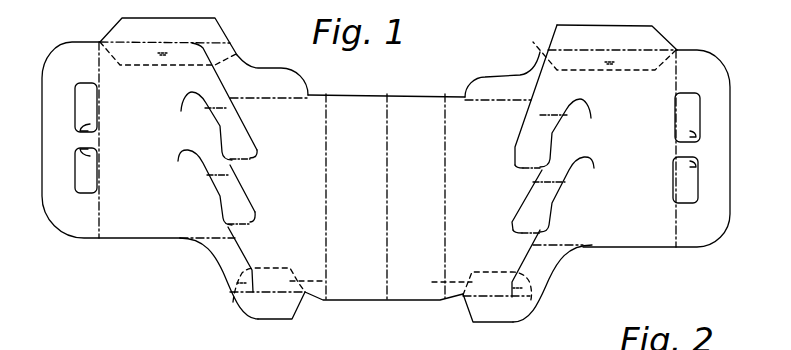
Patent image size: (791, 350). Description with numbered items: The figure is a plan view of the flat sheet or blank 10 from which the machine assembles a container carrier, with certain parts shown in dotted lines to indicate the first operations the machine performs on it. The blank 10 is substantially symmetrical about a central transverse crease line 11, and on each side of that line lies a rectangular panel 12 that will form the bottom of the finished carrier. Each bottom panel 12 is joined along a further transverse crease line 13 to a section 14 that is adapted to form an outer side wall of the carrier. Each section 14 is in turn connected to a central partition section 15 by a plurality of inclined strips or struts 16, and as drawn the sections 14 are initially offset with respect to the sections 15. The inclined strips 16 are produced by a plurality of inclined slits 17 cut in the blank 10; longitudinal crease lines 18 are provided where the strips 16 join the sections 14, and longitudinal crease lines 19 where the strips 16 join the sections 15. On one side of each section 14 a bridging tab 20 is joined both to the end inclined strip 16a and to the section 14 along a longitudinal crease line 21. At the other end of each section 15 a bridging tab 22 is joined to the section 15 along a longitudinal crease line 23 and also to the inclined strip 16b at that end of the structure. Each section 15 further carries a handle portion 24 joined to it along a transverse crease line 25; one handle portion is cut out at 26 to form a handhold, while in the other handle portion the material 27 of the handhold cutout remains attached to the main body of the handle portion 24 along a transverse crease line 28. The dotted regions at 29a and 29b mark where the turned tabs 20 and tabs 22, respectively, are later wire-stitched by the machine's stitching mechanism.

The sheet or blank 10 is at (160, 245).
The transverse crease line 11 is at (386, 130).
The rectangular panel 12 is at (379, 215).
The transverse crease line 13 is at (328, 148).
The section 14 is at (380, 143).
The central partition section 15 is at (387, 144).
The inclined strip or strut 16 is at (182, 110).
The inclined strip 16a is at (222, 268).
The inclined strip 16b is at (277, 80).
The inclined slit 17 is at (247, 129).
The longitudinal crease line 18 is at (254, 155).
The longitudinal crease line 19 is at (233, 104).
The bridging tab 20 is at (268, 318).
The longitudinal crease line 21 is at (288, 297).
The bridging tab 22 is at (122, 19).
The longitudinal crease line 23 is at (100, 42).
The handle portion 24 is at (52, 211).
The transverse crease line 25 is at (92, 234).
The handhold cutout 26 is at (692, 164).
The handhold cutout material 27 is at (78, 128).
The transverse crease line 28 is at (74, 105).
The stitching location 29a is at (234, 302).
The stitching location 29b is at (162, 57).